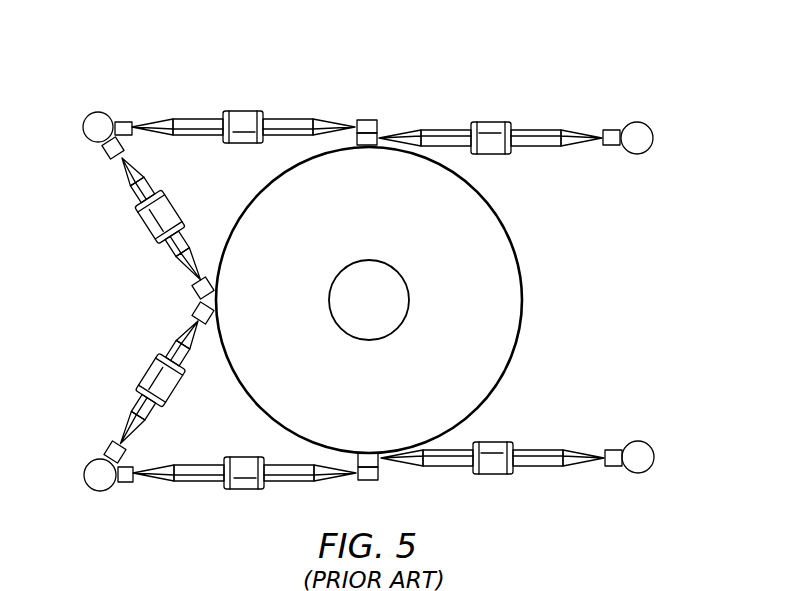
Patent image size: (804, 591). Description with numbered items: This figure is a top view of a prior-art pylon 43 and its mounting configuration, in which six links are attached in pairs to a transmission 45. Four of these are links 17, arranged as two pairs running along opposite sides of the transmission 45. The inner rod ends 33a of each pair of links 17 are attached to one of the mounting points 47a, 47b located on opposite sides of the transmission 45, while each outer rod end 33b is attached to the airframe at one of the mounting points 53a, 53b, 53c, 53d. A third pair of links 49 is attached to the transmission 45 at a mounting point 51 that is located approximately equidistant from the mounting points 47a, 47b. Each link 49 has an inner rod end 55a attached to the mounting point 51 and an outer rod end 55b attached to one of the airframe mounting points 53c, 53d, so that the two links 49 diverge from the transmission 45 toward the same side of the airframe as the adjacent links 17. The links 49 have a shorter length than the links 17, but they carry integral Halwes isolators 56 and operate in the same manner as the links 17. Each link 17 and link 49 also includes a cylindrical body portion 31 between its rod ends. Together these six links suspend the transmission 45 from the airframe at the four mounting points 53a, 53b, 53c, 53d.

The pylon 43 is at (333, 74).
The links 17 is at (199, 109).
The strut cylinder / clamp 31 is at (492, 119).
The transmission 45 is at (524, 300).
The mounting point 47a is at (368, 452).
The mounting point 47b is at (367, 148).
The links 49 is at (127, 199).
The mounting point 51 is at (218, 300).
The mounting point 53a is at (652, 130).
The mounting point 53b is at (652, 466).
The mounting point 53c is at (86, 482).
The mounting point 53d is at (84, 121).
The inner rod end 55a is at (195, 295).
The outer rod end 55b is at (106, 446).
The Halwes isolators 56 is at (171, 393).
The inner rod ends 33a is at (380, 478).
The outer rod ends 33b is at (610, 468).